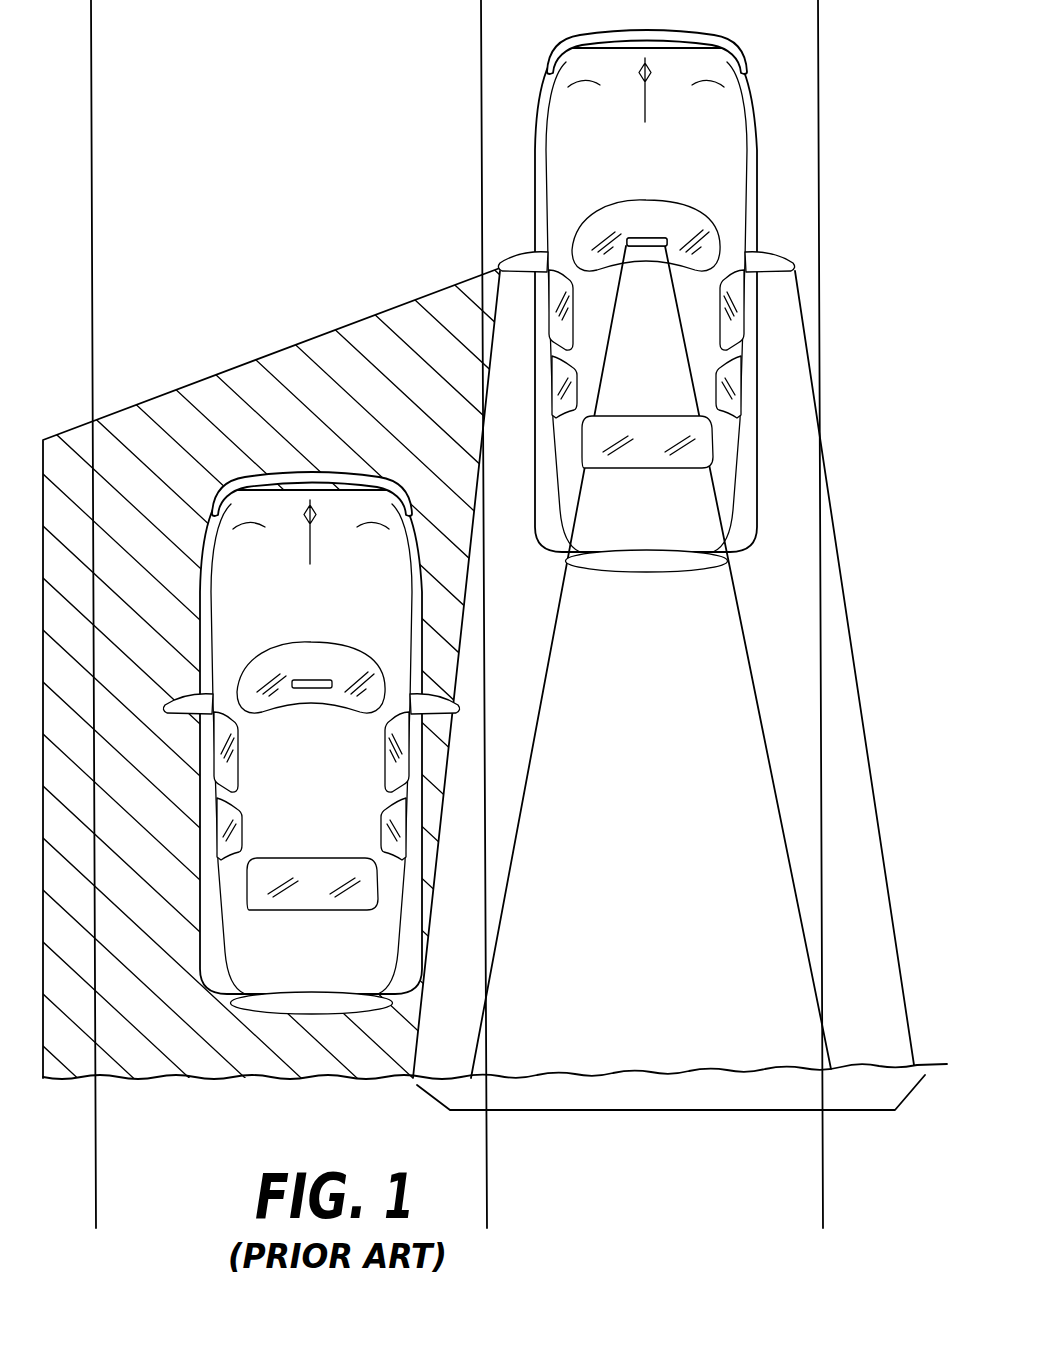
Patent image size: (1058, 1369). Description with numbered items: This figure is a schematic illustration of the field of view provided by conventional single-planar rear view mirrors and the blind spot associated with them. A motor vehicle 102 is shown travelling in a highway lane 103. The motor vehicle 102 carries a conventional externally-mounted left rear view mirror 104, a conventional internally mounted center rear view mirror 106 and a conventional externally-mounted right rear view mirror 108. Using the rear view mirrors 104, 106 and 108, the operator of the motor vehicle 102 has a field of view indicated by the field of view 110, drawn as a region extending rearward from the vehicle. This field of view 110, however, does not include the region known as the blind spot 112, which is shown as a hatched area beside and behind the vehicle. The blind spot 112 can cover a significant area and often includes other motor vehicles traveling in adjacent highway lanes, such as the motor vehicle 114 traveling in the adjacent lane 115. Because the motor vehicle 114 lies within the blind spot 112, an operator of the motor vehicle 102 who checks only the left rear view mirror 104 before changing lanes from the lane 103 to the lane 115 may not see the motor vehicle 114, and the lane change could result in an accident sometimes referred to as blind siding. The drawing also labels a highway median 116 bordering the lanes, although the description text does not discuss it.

The motor vehicle 102 is at (772, 107).
The highway lane 103 is at (682, 884).
The left rear view mirror 104 is at (491, 250).
The center rear view mirror 106 is at (644, 226).
The right rear view mirror 108 is at (788, 241).
The field of view 110 is at (685, 1110).
The blind spot 112 is at (397, 417).
The motor vehicle 114 is at (190, 576).
The lane 115 is at (265, 1088).
The highway median 116 is at (432, 81).